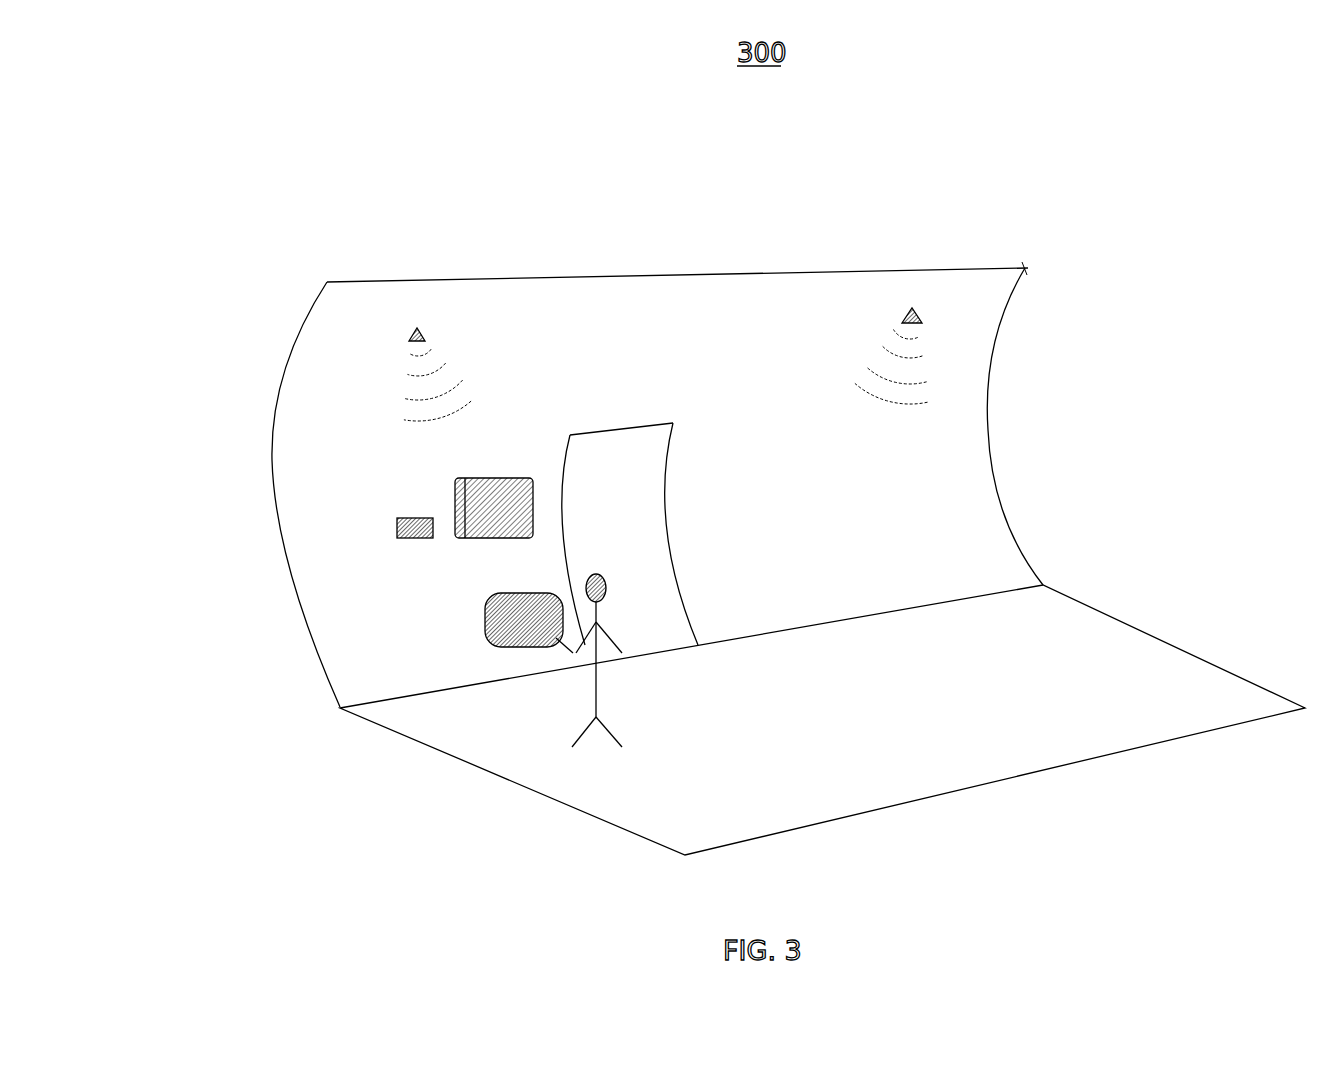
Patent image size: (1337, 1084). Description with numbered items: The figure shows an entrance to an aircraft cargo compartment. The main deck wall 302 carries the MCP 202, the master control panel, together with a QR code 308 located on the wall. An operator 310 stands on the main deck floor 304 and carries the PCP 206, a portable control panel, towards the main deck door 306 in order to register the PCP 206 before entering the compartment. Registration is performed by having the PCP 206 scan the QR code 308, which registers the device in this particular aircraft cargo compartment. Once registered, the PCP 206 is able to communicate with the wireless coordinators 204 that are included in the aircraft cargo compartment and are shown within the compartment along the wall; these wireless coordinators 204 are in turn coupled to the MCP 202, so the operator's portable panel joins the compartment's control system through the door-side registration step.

The MCP 202 is at (473, 477).
The wireless coordinators 204 is at (417, 326).
The PCP 206 is at (485, 630).
The main deck wall 302 is at (992, 417).
The main deck floor 304 is at (1128, 622).
The main deck door 306 is at (620, 427).
The QR code 308 is at (420, 517).
The operator 310 is at (592, 709).